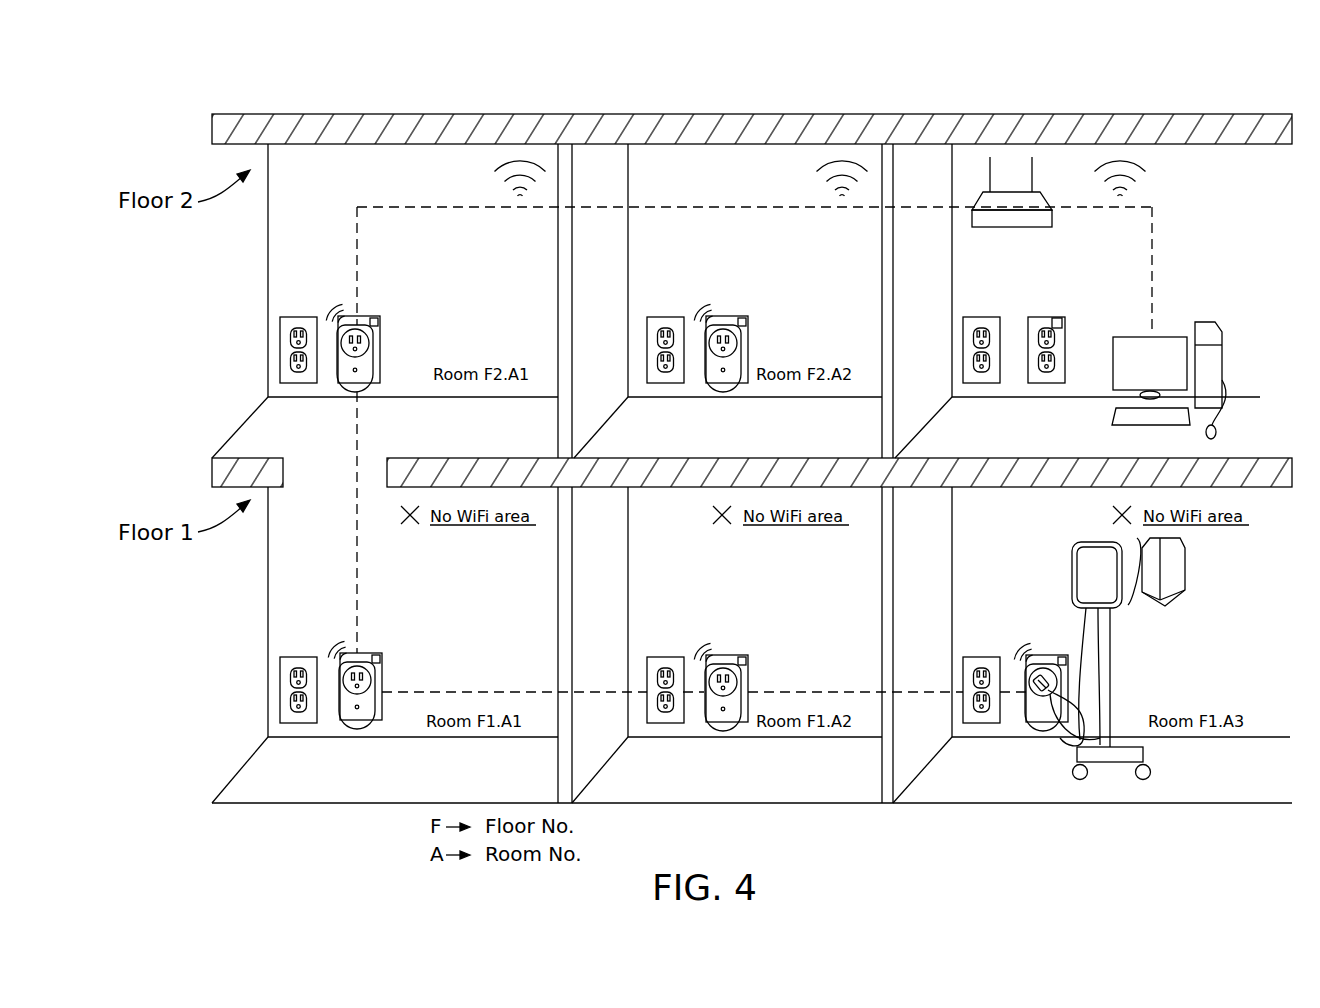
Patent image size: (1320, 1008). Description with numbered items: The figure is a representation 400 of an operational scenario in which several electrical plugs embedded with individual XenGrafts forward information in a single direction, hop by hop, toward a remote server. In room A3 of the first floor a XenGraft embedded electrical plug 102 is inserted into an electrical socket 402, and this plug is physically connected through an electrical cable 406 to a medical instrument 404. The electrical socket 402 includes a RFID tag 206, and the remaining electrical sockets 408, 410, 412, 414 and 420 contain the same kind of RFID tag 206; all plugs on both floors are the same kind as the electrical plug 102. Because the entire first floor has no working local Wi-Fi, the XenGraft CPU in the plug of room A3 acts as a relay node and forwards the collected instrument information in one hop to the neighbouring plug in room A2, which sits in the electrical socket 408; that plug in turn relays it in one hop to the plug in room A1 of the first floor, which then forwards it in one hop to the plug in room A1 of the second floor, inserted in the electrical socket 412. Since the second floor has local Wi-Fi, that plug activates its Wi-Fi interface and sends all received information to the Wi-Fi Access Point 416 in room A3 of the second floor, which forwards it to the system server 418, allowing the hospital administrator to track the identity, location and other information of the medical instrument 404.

The representation 400 is at (307, 95).
The XenGraft embedded electrical plug 102 is at (368, 362).
The RFID tag 206 is at (380, 321).
The electrical socket 402 is at (1057, 656).
The medical instrument 404 is at (1076, 552).
The electrical cable 406 is at (1098, 708).
The electrical socket 408 is at (746, 655).
The electrical socket 410 is at (369, 653).
The electrical socket 412 is at (373, 314).
The electrical socket 414 is at (742, 314).
The Wi-Fi Access Point 416 is at (1012, 200).
The system server 418 is at (1168, 300).
The electrical socket 420 is at (1028, 316).